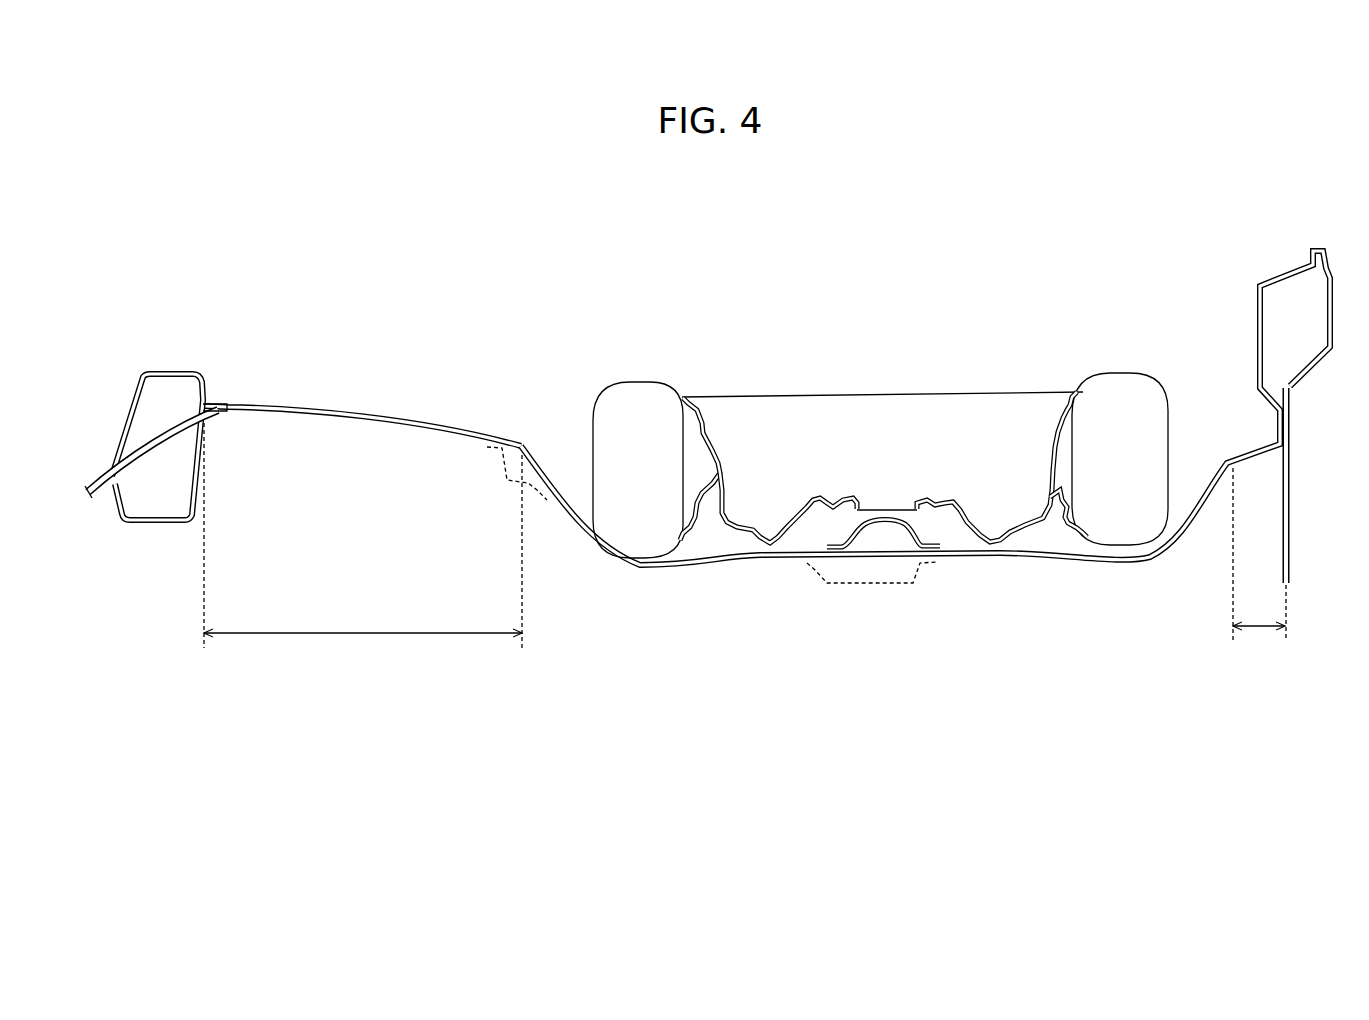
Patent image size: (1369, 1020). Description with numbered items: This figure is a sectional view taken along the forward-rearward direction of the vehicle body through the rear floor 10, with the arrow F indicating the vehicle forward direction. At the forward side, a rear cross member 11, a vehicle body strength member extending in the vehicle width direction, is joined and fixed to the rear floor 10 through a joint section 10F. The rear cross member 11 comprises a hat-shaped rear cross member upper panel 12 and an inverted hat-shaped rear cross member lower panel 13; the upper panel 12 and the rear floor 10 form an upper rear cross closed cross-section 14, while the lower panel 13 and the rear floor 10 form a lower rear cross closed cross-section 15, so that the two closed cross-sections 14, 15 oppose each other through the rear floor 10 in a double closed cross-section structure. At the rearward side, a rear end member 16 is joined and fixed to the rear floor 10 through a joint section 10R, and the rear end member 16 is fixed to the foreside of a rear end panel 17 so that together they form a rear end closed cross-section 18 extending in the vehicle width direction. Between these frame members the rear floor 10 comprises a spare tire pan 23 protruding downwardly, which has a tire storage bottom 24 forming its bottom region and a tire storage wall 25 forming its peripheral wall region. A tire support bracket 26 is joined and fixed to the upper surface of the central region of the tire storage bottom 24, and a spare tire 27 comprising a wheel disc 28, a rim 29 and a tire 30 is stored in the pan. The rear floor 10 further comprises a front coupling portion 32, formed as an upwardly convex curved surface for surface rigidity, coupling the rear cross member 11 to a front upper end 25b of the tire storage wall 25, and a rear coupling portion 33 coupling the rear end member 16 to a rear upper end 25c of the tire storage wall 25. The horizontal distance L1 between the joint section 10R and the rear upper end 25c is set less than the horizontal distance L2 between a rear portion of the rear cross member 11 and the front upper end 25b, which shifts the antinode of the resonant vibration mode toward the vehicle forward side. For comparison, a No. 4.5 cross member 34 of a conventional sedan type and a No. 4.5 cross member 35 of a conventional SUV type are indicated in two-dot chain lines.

The rear floor 10 is at (348, 398).
The joint section 10F is at (213, 415).
The joint section 10R is at (1282, 425).
The rear cross member 11 is at (184, 368).
The rear cross member upper panel 12 is at (140, 385).
The rear cross member lower panel 13 is at (146, 522).
The rear cross closed cross-section 14 is at (160, 415).
The rear cross closed cross-section 15 is at (135, 495).
The rear end member 16 is at (1258, 315).
The rear end panel 17 is at (1292, 500).
The rear end closed cross-section 18 is at (1281, 341).
The spare tire pan 23 is at (753, 558).
The tire storage bottom 24 is at (788, 565).
The tire storage wall 25 is at (555, 492).
The front upper end 25b is at (525, 440).
The rear upper end 25c is at (1225, 460).
The tire support bracket 26 is at (900, 513).
The spare tire 27 is at (890, 393).
The wheel disc 28 is at (962, 500).
The rim 29 is at (1065, 410).
The tire 30 is at (1120, 372).
The front coupling portion 32 is at (410, 415).
The rear coupling portion 33 is at (1253, 463).
The No. 4.5 cross member 34 is at (505, 478).
The No. 4.5 cross member 35 is at (940, 568).
The horizontal distance L1 is at (1262, 630).
The horizontal distance L2 is at (333, 636).
The front direction F is at (372, 247).